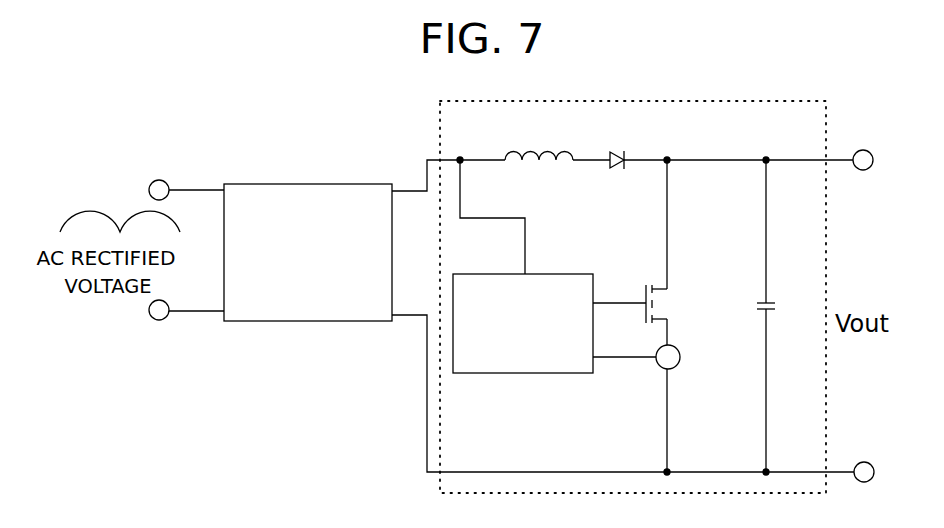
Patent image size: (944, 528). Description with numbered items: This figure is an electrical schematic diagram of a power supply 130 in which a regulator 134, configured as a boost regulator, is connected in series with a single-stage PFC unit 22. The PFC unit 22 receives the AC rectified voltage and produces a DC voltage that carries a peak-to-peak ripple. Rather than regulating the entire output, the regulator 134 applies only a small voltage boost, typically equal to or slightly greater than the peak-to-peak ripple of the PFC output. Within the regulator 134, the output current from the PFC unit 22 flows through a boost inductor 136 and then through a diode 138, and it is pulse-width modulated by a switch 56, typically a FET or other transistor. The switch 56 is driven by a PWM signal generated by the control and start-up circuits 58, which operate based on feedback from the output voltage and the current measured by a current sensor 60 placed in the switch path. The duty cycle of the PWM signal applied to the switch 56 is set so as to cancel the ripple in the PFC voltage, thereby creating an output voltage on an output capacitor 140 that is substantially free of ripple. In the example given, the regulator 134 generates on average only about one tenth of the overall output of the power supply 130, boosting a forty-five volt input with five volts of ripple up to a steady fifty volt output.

The PFC unit 22 is at (289, 184).
The power supply 130 is at (664, 256).
The regulator 134 is at (748, 101).
The boost inductor 136 is at (528, 165).
The diode 138 is at (620, 167).
The control and start-up circuits 58 is at (575, 274).
The switch 56 is at (652, 303).
The current sensor 60 is at (672, 368).
The output capacitor 140 is at (768, 299).